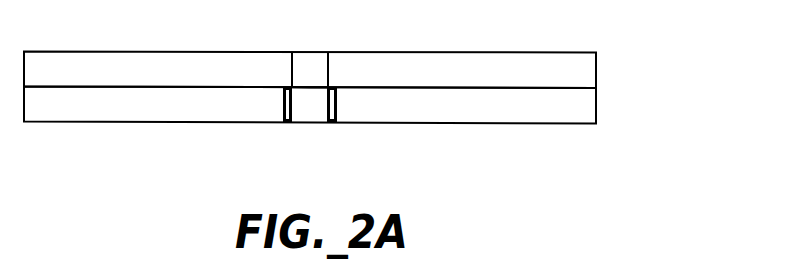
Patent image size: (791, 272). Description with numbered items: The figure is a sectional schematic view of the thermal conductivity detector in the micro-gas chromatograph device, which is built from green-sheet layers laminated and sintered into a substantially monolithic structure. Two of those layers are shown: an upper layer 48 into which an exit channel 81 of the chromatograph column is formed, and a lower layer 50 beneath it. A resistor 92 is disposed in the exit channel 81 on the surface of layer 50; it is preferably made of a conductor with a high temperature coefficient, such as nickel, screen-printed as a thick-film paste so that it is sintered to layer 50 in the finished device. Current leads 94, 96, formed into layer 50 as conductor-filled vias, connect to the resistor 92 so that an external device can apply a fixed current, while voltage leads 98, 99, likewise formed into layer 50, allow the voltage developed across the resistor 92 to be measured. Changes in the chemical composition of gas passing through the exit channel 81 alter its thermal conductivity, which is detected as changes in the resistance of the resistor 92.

The green-sheet layer 48 is at (596, 75).
The green-sheet layer 50 is at (596, 107).
The resistor 92 is at (318, 87).
The exit channel 81 is at (330, 70).
The current lead 94 is at (283, 102).
The current lead 96 is at (338, 102).
The voltage lead 98 is at (293, 110).
The voltage lead 99 is at (327, 110).